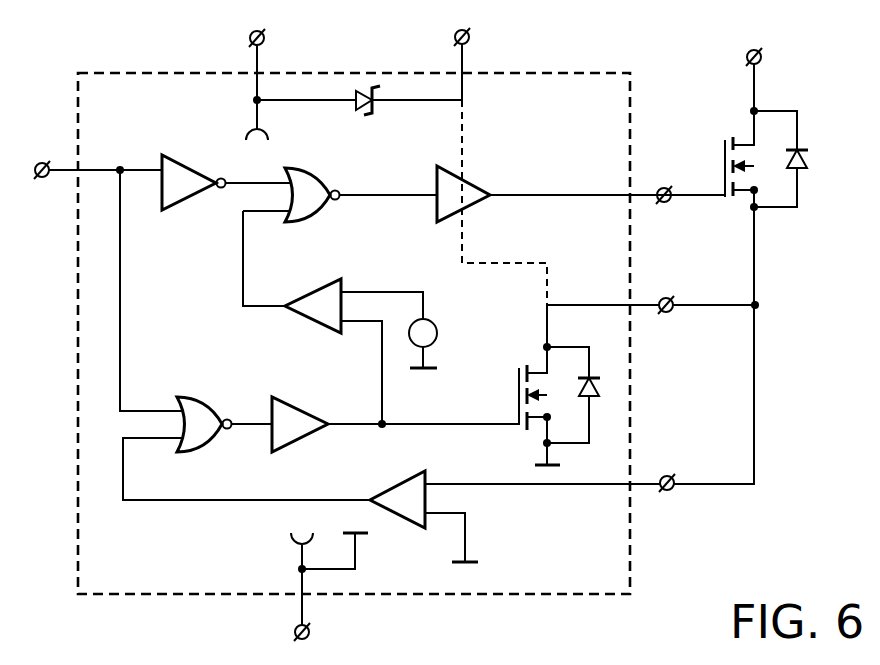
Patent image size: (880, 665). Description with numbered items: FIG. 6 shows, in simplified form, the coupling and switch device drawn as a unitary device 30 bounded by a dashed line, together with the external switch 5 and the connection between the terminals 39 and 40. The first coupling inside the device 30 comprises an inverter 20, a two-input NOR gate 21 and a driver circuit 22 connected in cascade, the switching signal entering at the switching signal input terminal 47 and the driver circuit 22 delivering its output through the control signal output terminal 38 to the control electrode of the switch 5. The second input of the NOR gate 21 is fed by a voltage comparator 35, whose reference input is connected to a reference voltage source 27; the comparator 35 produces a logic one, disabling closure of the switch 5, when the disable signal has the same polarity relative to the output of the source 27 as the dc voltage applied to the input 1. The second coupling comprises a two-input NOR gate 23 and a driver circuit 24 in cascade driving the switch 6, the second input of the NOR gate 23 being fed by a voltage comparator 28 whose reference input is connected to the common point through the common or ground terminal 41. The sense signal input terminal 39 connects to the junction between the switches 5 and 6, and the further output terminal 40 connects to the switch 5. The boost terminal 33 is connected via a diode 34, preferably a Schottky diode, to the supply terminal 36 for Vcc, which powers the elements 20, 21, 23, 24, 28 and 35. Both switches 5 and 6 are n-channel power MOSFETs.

The input 1 is at (762, 57).
The switch 5 is at (713, 139).
The switch 6 is at (510, 353).
The inverter 20 is at (190, 157).
The two-input NOR gate 21 is at (318, 220).
The driver circuit 22 is at (480, 185).
The two-input NOR gate 23 is at (208, 395).
The driver circuit 24 is at (290, 395).
The reference voltage source 27 is at (436, 318).
The voltage comparator 28 is at (380, 486).
The unitary device 30 is at (137, 73).
The boost terminal 33 is at (455, 37).
The diode 34 is at (362, 113).
The voltage comparator 35 is at (306, 288).
The supply terminal 36 is at (250, 38).
The control signal output terminal 38 is at (660, 185).
The sense signal input terminal 39 is at (663, 473).
The further output terminal 40 is at (660, 296).
The common or ground terminal 41 is at (294, 632).
The switching signal input terminal 47 is at (42, 160).